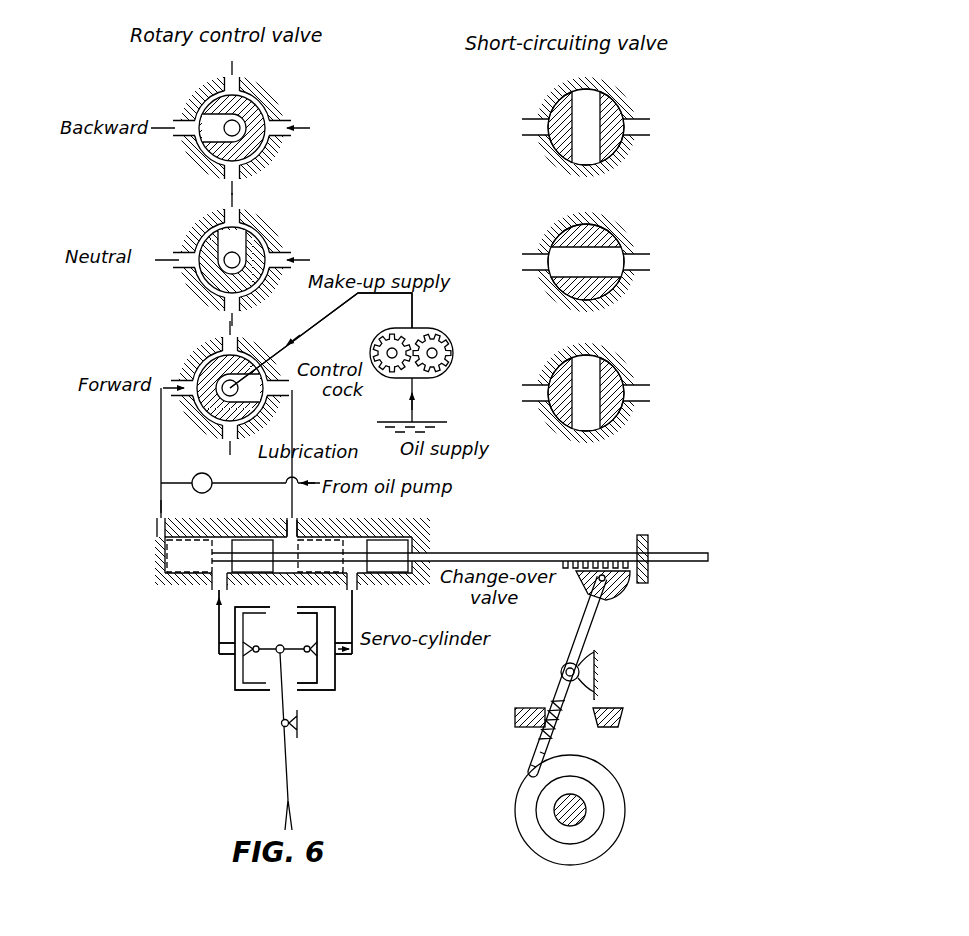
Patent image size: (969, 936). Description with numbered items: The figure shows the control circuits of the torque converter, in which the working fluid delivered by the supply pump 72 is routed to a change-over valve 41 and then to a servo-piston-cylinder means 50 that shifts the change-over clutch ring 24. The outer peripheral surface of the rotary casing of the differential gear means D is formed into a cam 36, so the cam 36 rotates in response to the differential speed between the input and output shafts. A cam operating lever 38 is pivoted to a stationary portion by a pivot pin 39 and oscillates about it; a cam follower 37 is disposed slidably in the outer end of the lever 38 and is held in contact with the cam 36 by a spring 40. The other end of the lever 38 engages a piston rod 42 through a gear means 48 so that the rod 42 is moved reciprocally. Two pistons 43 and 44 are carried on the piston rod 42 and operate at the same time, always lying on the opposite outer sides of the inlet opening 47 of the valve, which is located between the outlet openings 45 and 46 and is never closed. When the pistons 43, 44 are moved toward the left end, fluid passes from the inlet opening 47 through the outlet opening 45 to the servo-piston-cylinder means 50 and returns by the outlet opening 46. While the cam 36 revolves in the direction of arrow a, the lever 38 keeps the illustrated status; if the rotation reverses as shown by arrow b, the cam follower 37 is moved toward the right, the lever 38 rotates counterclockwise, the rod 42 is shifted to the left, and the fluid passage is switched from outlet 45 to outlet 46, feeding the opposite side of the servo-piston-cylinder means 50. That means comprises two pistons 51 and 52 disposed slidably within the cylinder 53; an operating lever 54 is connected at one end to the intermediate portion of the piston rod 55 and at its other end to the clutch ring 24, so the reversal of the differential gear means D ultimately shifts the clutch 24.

The change-over clutch 24 is at (292, 798).
The cam 36 is at (538, 870).
The cam follower 37 is at (528, 768).
The cam operating lever 38 is at (592, 628).
The pivot pin 39 is at (567, 664).
The spring 40 is at (552, 700).
The change-over valve 41 is at (168, 590).
The piston rod 42 is at (697, 558).
The piston 43 is at (404, 578).
The piston 44 is at (248, 578).
The outlet opening 45 is at (357, 590).
The outlet opening 46 is at (214, 594).
The inlet opening 47 is at (287, 525).
The gear means 48 is at (618, 592).
The servo-piston-cylinder means 50 is at (340, 672).
The servo-piston 51 is at (312, 613).
The servo-piston 52 is at (252, 688).
The cylinder 53 is at (318, 692).
The operating lever 54 is at (290, 750).
The piston rod 55 is at (268, 650).
The supply pump 72 is at (452, 340).
The differential gear means D is at (626, 854).
The arrow a is at (506, 786).
The arrow b is at (634, 812).